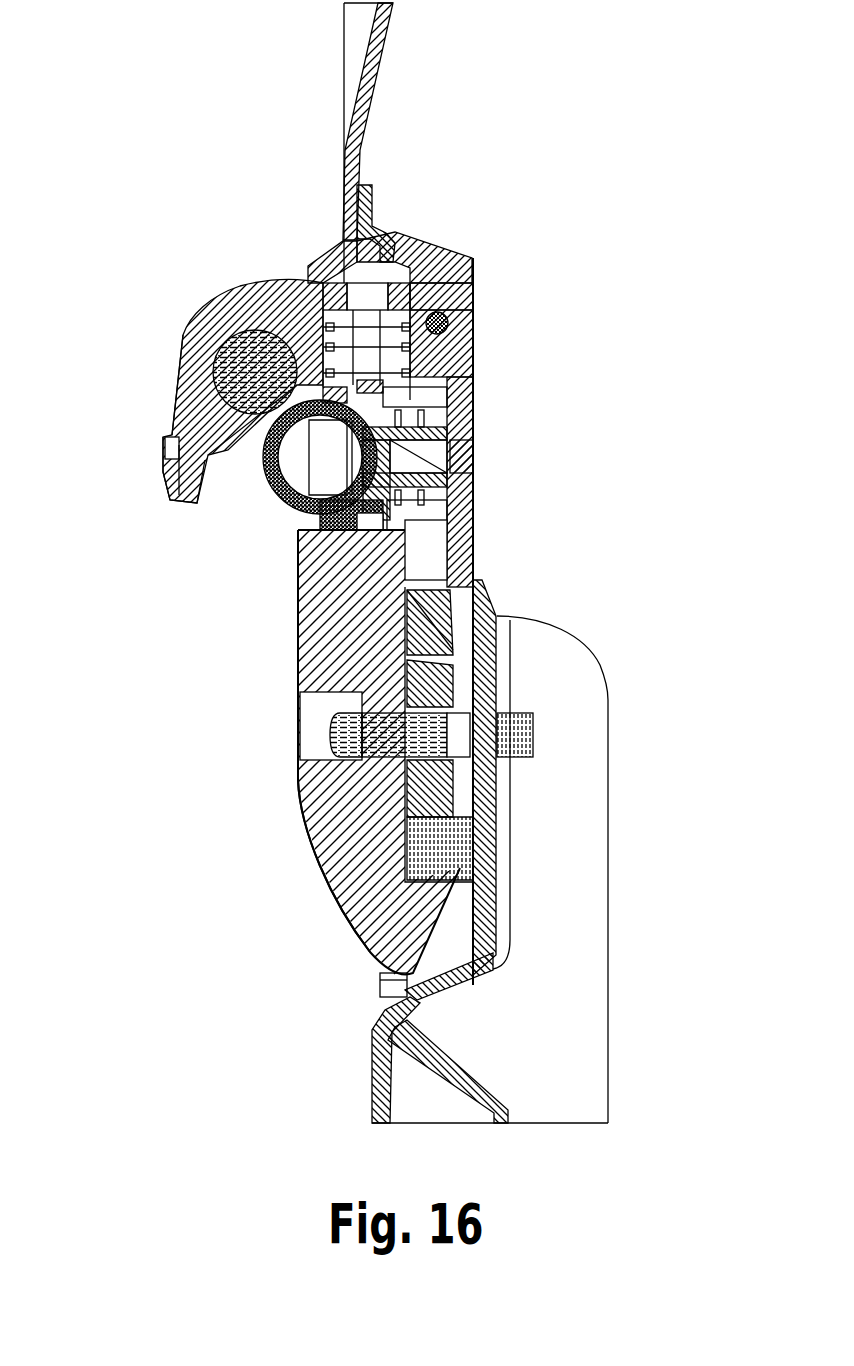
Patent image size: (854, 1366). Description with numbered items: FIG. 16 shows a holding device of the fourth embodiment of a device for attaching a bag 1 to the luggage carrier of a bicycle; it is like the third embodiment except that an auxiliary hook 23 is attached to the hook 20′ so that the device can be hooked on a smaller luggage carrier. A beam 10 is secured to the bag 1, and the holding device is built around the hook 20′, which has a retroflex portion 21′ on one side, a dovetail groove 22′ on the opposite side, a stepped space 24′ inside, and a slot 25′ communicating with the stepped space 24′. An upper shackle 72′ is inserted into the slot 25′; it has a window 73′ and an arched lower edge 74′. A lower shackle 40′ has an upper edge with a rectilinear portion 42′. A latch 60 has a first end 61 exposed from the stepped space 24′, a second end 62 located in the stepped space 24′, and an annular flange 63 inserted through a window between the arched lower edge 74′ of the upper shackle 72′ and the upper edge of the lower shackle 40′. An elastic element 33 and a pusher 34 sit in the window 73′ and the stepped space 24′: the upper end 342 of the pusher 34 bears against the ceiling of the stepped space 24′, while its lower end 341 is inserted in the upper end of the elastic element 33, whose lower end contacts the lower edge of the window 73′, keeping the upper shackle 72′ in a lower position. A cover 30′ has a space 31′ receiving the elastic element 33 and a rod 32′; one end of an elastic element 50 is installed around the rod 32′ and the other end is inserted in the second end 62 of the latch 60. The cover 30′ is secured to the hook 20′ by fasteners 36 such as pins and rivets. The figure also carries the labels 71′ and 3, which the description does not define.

The post 71′ is at (392, 30).
The upper shackle 72′ is at (385, 230).
The slot 25′ is at (340, 256).
The pusher 34 is at (323, 268).
The upper end of the pusher 342 is at (415, 268).
The lower end of the pusher 341 is at (440, 283).
The window 73′ is at (475, 305).
The space 31′ is at (477, 360).
The fasteners 36 is at (477, 335).
The elastic element 33 is at (477, 396).
The arched lower edge 74′ is at (477, 432).
The rod 32′ is at (477, 462).
The elastic element 50 is at (470, 516).
The cover 30′ is at (477, 560).
The retroflex portion 21′ is at (200, 302).
The auxiliary hook 23 is at (215, 335).
The annular flange 63 is at (217, 370).
The handle 3 is at (213, 398).
The first end of the latch 61 is at (262, 450).
The latch 60 is at (280, 505).
The stepped space 24′ is at (320, 520).
The lower shackle 40′ is at (320, 628).
The hook 20′ is at (303, 802).
The second end of the latch 62 is at (320, 590).
The dovetail groove 22′ is at (403, 830).
The rectilinear portion 42′ is at (583, 657).
The beam 10 is at (520, 810).
The bag 1 is at (573, 883).